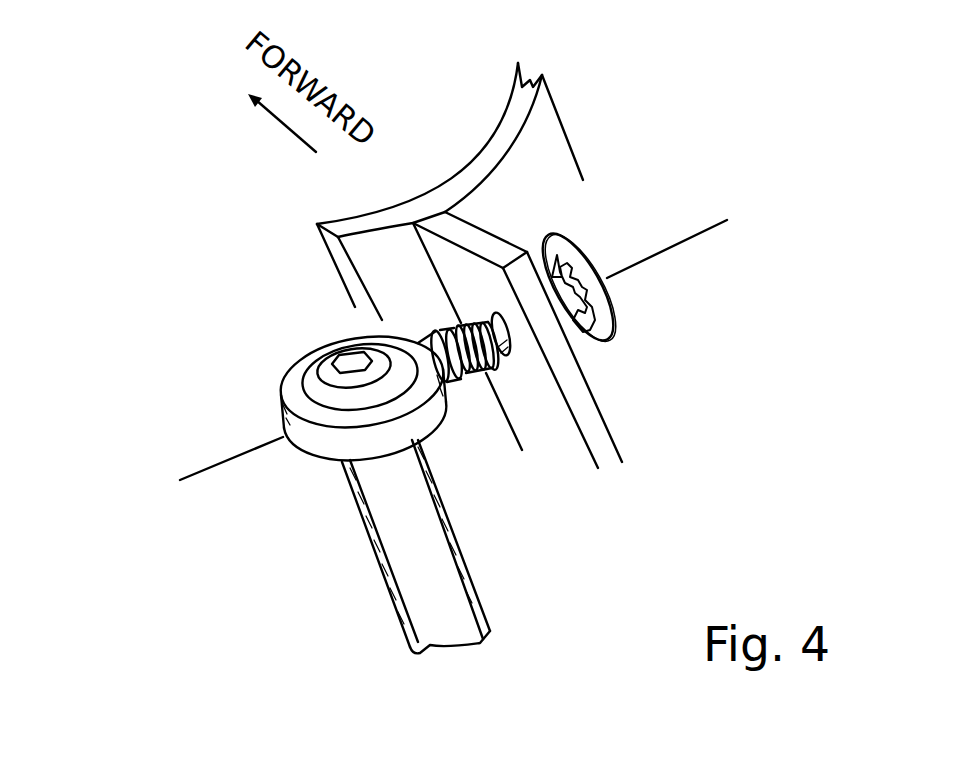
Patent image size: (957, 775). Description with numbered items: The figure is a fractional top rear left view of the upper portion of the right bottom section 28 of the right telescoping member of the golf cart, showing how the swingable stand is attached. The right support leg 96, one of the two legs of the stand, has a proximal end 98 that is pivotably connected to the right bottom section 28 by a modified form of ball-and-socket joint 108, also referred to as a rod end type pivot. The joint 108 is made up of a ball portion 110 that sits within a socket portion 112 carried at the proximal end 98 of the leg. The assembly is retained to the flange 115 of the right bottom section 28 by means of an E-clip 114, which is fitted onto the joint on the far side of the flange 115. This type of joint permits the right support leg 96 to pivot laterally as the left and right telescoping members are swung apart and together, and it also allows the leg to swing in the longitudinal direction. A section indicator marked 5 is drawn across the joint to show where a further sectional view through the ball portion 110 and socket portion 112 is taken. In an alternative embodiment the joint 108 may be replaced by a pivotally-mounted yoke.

The right bottom section 28 is at (487, 160).
The ball-and-socket joint 108 is at (410, 313).
The flange 115 is at (535, 380).
The E-clip 114 is at (577, 249).
The socket portion 112 is at (293, 393).
The ball portion 110 is at (310, 387).
The proximal end 98 is at (398, 513).
The right support leg 96 is at (401, 630).
The section line 5 is at (196, 490).